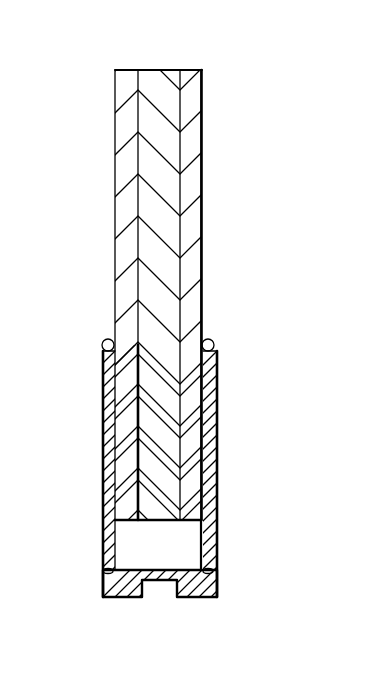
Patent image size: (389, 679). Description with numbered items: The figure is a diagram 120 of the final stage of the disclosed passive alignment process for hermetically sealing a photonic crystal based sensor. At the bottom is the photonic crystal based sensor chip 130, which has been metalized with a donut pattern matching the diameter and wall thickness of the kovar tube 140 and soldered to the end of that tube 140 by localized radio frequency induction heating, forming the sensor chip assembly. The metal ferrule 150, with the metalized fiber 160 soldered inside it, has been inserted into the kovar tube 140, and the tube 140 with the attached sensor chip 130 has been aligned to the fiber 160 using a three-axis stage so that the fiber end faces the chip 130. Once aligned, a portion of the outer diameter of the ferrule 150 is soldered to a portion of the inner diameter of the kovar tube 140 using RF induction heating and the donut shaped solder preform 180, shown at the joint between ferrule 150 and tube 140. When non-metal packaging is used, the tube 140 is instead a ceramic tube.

The diagram 120 is at (243, 220).
The photonic crystal based sensor chip 130 is at (103, 582).
The kovar tube 140 is at (103, 465).
The metal ferrule 150 is at (115, 163).
The metalized fiber 160 is at (160, 70).
The donut shaped solder preform 180 is at (107, 338).